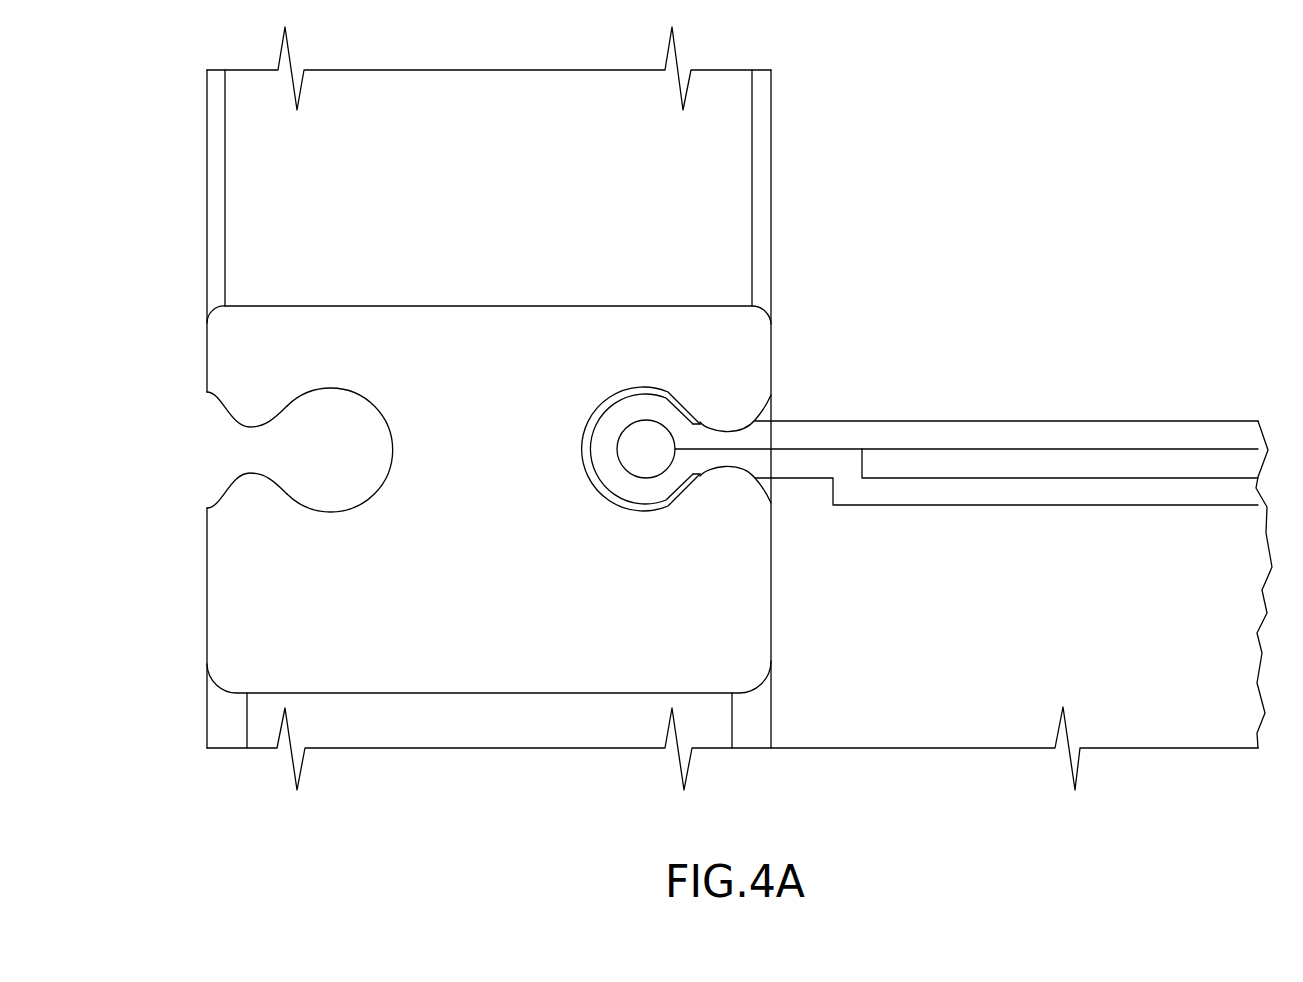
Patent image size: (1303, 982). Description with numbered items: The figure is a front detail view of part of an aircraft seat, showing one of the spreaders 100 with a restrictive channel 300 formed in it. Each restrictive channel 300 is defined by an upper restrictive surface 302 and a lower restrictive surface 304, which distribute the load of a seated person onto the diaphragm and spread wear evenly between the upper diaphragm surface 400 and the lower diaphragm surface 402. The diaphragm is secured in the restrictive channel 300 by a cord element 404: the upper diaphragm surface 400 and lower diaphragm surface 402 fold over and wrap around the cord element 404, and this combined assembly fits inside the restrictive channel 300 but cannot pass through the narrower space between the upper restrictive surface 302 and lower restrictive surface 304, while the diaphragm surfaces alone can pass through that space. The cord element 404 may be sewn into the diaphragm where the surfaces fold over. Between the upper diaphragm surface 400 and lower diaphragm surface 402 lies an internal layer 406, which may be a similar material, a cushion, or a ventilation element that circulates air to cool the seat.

The spreader 100 is at (234, 207).
The restrictive channel 300 is at (335, 457).
The upper restrictive surface 302 is at (247, 417).
The lower restrictive surface 304 is at (248, 485).
The upper diaphragm surface 400 is at (963, 433).
The lower diaphragm surface 402 is at (828, 465).
The cord element 404 is at (646, 449).
The internal layer 406 is at (1090, 490).